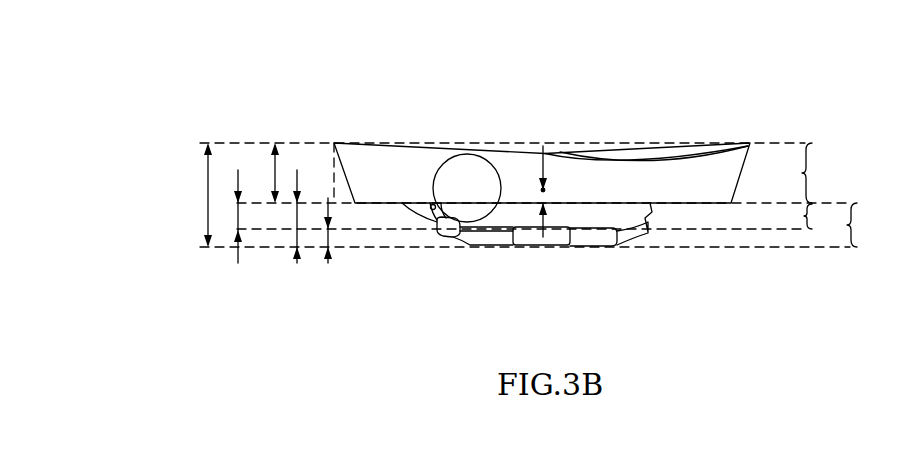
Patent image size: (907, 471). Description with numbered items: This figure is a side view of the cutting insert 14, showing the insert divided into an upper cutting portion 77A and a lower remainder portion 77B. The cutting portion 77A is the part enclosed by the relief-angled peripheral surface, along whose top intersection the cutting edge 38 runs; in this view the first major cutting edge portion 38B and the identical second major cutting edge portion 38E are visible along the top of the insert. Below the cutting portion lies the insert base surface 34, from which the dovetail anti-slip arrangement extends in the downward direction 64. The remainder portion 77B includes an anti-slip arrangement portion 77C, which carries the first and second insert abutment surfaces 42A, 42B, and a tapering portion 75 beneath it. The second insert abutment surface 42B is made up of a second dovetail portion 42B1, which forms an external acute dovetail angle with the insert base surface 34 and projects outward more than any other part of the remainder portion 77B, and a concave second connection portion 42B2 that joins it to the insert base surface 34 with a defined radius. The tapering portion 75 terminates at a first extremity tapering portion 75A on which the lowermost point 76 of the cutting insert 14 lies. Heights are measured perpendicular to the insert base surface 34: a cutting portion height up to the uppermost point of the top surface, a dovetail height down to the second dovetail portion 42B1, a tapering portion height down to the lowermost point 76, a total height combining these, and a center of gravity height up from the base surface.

The cutting insert 14 is at (750, 68).
The cutting edge 38 is at (338, 140).
The first major cutting edge portion 38B is at (518, 151).
The second major cutting edge portion 38E is at (660, 145).
The second dovetail portion 42B1 is at (490, 160).
The second connection portion 42B2 is at (434, 204).
The second insert abutment surface 42B is at (405, 220).
The first insert abutment surface 42A is at (588, 212).
The insert base surface 34 is at (697, 203).
The downward direction 64 is at (467, 300).
The tapering portion 75 is at (828, 238).
The first extremity tapering portion 75A is at (493, 258).
The lowermost point 76 is at (508, 248).
The cutting portion 77A is at (830, 173).
The remainder portion 77B is at (875, 225).
The anti-slip arrangement portion 77C is at (830, 216).